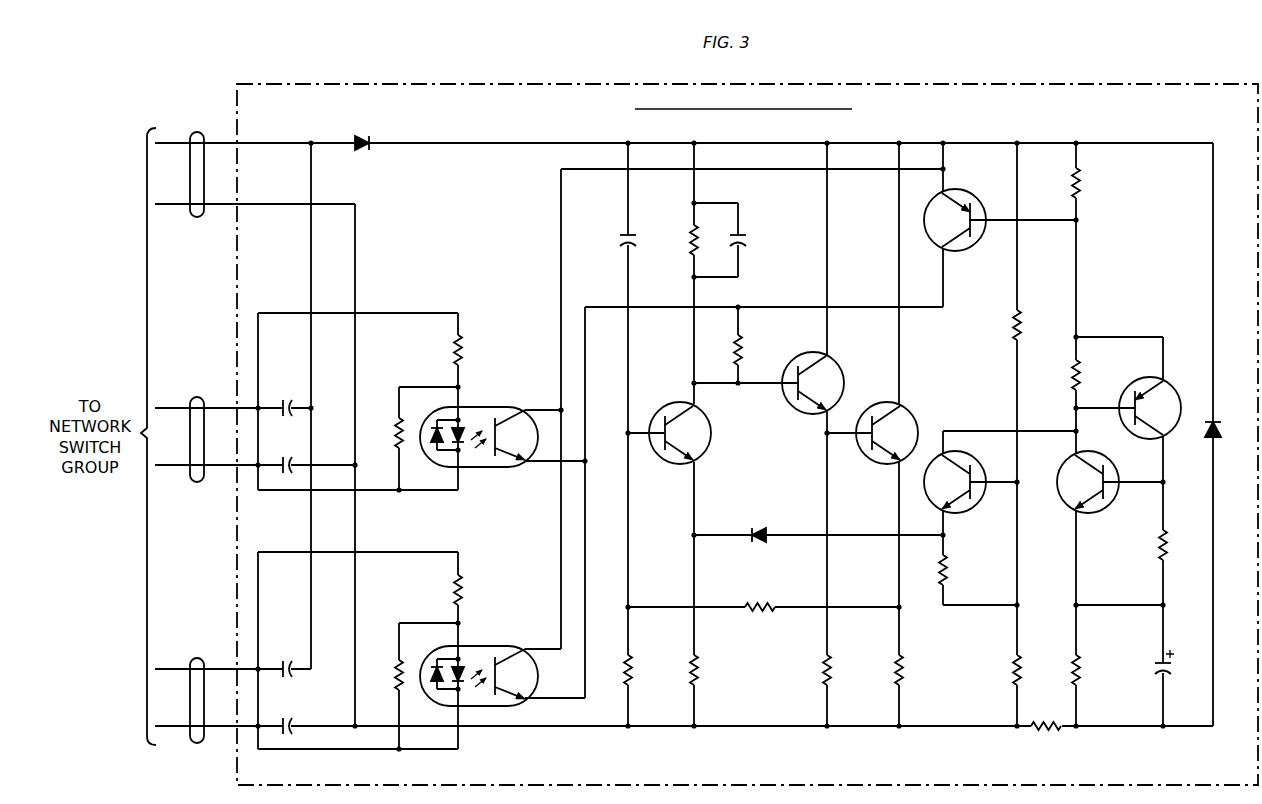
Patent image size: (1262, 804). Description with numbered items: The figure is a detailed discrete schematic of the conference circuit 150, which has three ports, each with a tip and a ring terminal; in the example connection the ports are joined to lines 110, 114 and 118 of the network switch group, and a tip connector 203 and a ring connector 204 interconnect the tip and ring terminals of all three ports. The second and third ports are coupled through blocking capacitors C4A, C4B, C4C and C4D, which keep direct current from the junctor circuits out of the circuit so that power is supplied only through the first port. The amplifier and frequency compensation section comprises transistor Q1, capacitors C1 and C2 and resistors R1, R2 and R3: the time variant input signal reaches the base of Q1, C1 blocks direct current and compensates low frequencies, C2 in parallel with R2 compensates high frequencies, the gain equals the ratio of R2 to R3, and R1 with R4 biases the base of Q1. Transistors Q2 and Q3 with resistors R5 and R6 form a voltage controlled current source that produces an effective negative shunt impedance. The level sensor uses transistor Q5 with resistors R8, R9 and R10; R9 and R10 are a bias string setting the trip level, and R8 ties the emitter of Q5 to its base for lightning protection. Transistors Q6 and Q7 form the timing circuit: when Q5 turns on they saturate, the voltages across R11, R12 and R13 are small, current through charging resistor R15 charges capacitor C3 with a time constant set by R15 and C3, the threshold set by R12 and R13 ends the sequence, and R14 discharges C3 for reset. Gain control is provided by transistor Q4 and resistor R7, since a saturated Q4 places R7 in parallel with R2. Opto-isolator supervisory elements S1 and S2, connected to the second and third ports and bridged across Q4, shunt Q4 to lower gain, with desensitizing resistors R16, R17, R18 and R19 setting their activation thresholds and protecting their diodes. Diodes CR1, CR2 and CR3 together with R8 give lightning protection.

The line 110 is at (197, 130).
The line 114 is at (197, 396).
The line 118 is at (197, 658).
The conference circuit 150 is at (603, 85).
The tip connector 203 is at (422, 143).
The ring connector 204 is at (493, 728).
The diode CR1 is at (357, 131).
The diode CR2 is at (758, 523).
The diode CR3 is at (1236, 428).
The resistor R1 is at (641, 670).
The resistor R2 is at (677, 240).
The resistor R3 is at (707, 670).
The resistor R4 is at (760, 593).
The resistor R5 is at (840, 670).
The resistor R6 is at (912, 670).
The resistor R7 is at (751, 350).
The resistor R8 is at (957, 570).
The resistor R9 is at (1030, 325).
The resistor R10 is at (1035, 670).
The resistor R11 is at (1094, 183).
The resistor R12 is at (1094, 375).
The resistor R13 is at (1143, 545).
The resistor R14 is at (1094, 670).
The charging resistor R15 is at (1045, 711).
The desensitizing resistor R16 is at (475, 350).
The desensitizing resistor R17 is at (379, 433).
The desensitizing resistor R18 is at (475, 590).
The desensitizing resistor R19 is at (379, 675).
The capacitor C1 is at (613, 241).
The capacitor C2 is at (749, 241).
The capacitor C3 is at (1177, 664).
The capacitor C4A is at (284, 398).
The capacitor C4B is at (284, 455).
The capacitor C4C is at (284, 659).
The capacitor C4D is at (285, 716).
The transistor Q1 is at (689, 433).
The transistor Q2 is at (821, 382).
The transistor Q3 is at (895, 432).
The transistor Q4 is at (961, 213).
The transistor Q5 is at (966, 482).
The transistor Q6 is at (1098, 482).
The transistor Q7 is at (1161, 406).
The supervisory circuit element S1 is at (479, 426).
The supervisory circuit element S2 is at (479, 664).